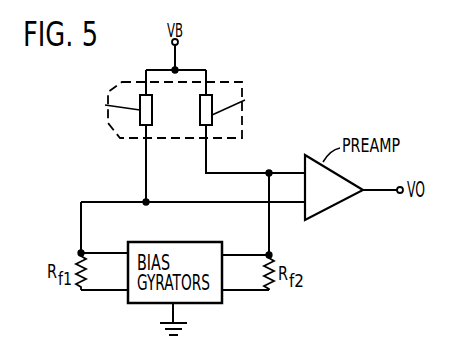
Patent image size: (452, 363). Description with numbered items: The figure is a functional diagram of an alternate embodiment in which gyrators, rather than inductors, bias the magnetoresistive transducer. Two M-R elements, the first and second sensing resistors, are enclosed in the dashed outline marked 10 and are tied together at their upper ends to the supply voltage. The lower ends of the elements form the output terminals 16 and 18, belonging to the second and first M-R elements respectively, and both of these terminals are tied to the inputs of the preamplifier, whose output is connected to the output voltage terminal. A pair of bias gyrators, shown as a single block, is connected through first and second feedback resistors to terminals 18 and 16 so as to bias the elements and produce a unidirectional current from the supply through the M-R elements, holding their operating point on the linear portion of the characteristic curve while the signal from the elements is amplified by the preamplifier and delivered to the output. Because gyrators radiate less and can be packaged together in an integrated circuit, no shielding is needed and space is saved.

The magnetoresistive sensor bridge (RH1, RH2) 10 is at (223, 81).
The output terminal 16 is at (270, 172).
The output terminal 18 is at (145, 201).